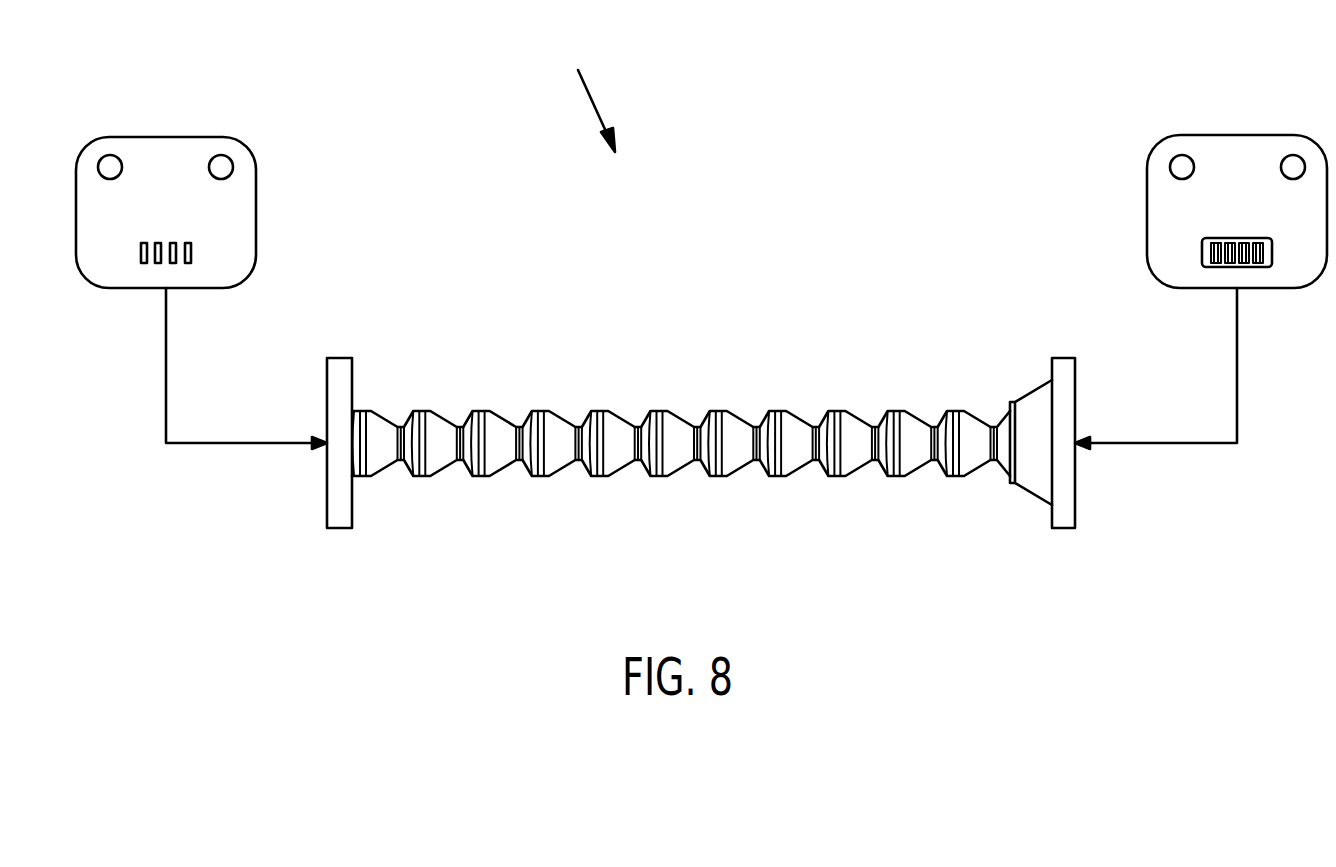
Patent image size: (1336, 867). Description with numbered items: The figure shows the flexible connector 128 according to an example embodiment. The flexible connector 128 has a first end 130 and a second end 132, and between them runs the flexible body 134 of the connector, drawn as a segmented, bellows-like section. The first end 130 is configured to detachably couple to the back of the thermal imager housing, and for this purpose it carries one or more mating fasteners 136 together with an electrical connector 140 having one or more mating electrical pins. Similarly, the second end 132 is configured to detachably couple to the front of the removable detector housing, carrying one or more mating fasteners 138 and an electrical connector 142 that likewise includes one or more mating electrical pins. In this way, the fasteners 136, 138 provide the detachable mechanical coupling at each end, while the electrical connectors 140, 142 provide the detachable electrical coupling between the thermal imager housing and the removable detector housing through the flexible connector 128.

The flexible connector 128 is at (587, 98).
The first end 130 is at (248, 140).
The second end 132 is at (1155, 155).
The flexible conduit 134 is at (655, 411).
The mating fasteners 136 is at (218, 152).
The mating fasteners 138 is at (1290, 152).
The electrical connector 140 is at (170, 235).
The electrical connector 142 is at (1208, 238).